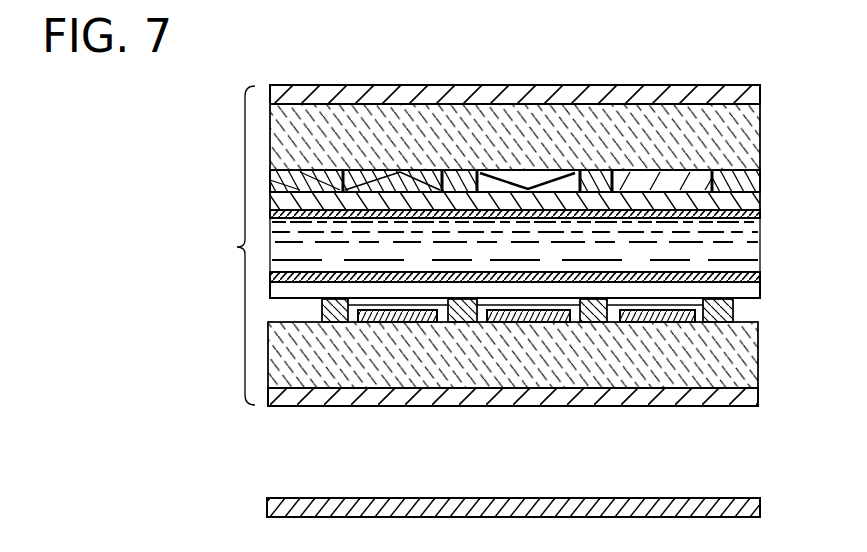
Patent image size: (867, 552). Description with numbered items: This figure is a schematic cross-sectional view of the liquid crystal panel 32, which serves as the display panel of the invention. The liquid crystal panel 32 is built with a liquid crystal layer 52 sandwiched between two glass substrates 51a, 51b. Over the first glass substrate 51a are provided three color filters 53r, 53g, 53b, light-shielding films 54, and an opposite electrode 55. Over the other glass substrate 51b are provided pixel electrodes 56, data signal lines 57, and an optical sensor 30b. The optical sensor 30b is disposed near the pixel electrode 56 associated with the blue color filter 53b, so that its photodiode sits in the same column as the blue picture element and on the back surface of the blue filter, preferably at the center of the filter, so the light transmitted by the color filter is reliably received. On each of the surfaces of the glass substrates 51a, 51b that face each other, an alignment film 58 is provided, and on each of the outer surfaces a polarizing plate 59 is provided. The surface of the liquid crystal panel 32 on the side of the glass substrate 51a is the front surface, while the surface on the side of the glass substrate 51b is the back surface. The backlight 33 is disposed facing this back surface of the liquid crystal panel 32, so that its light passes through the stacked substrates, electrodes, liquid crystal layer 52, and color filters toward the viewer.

The polarizing plate 59 is at (760, 97).
The glass substrate 51a is at (760, 137).
The light-shielding films 54 is at (760, 183).
The red color filter 53r is at (400, 180).
The green color filter 53g is at (533, 183).
The blue color filter 53b is at (660, 183).
The opposite electrode 55 is at (760, 200).
The alignment film 58 is at (760, 215).
The liquid crystal layer 52 is at (760, 247).
The glass substrate 51b is at (758, 353).
The data signal lines 57 is at (328, 322).
The pixel electrodes 56 is at (625, 322).
The optical sensor 30b is at (665, 322).
The liquid crystal panel 32 is at (231, 245).
The backlight 33 is at (265, 508).